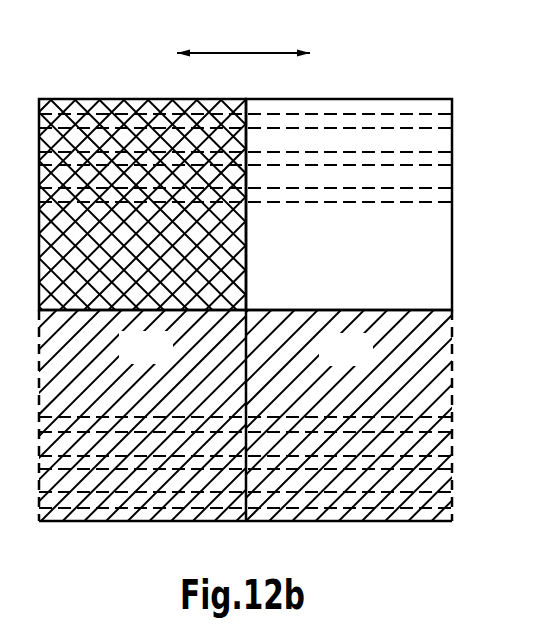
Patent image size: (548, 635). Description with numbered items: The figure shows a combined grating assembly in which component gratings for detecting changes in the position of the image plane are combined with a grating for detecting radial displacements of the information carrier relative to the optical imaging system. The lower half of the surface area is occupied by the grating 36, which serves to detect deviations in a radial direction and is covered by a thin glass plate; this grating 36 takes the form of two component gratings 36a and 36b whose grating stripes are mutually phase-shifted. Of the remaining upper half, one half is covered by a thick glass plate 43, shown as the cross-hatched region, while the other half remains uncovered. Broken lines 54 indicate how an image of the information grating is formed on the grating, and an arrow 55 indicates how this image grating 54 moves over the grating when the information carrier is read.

The thick glass plate 43 is at (113, 170).
The broken lines (image of the information grating) 54 is at (448, 167).
The arrow 55 is at (262, 53).
The grating 36 is at (274, 429).
The component grating 36a is at (167, 360).
The component grating 36b is at (367, 362).